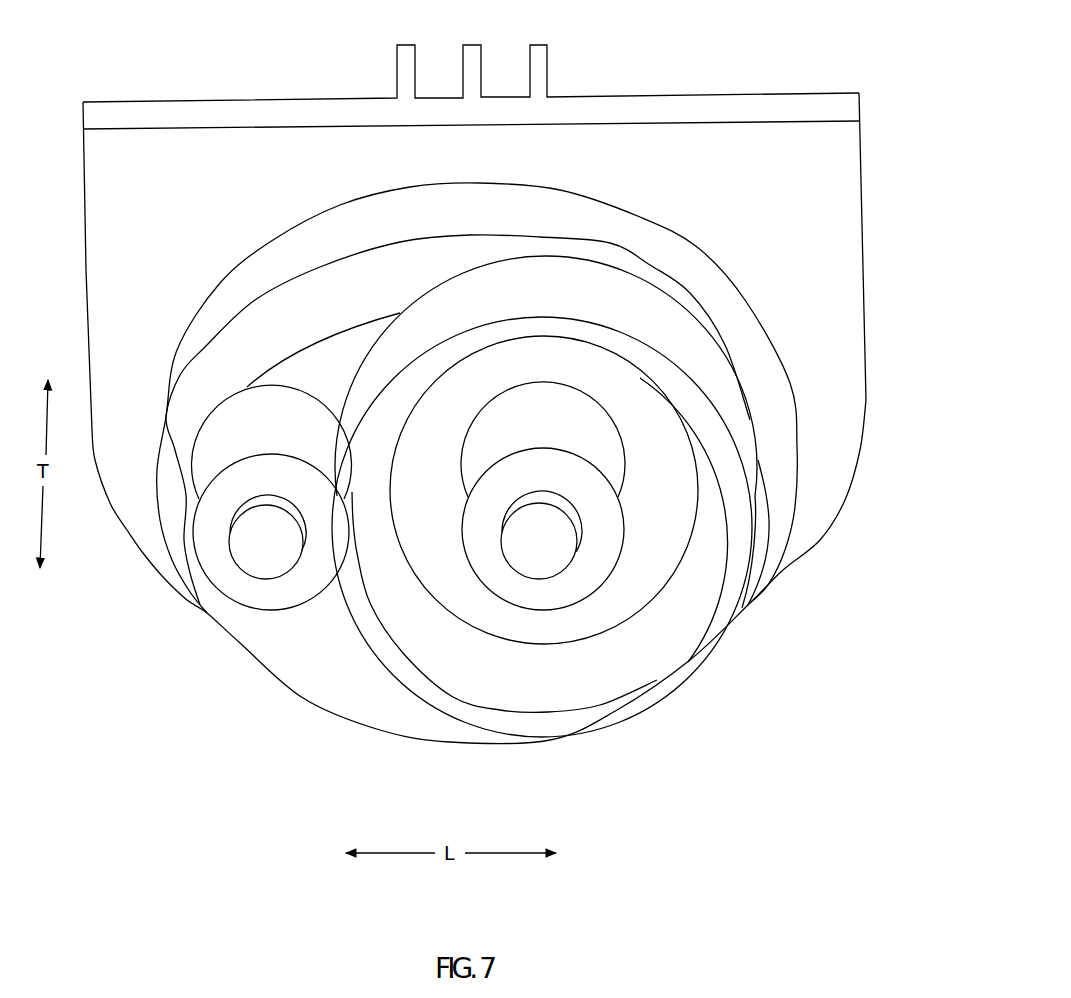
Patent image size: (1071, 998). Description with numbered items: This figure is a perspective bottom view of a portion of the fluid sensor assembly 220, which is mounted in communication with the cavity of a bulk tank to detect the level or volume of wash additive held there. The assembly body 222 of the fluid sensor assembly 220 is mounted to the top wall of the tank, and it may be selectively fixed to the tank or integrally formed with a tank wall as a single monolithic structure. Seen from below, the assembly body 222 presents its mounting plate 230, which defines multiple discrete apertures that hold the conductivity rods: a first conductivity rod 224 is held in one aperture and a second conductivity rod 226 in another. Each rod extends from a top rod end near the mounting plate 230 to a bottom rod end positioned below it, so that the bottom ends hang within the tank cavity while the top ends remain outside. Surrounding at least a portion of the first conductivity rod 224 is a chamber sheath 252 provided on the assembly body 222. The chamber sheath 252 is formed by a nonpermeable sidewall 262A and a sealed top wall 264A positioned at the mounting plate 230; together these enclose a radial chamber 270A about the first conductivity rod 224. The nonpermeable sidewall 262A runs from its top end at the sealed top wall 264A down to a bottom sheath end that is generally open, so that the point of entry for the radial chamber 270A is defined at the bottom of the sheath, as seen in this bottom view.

The fluid sensor assembly 220 is at (910, 113).
The assembly body 222 is at (548, 113).
The mounting plate 230 is at (310, 302).
The chamber sheath 252 is at (642, 308).
The nonpermeable sidewall 262A is at (545, 323).
The sealed top wall 264A is at (670, 435).
The radial chamber 270A is at (665, 632).
The first conductivity rod 224 is at (538, 550).
The second conductivity rod 226 is at (262, 545).